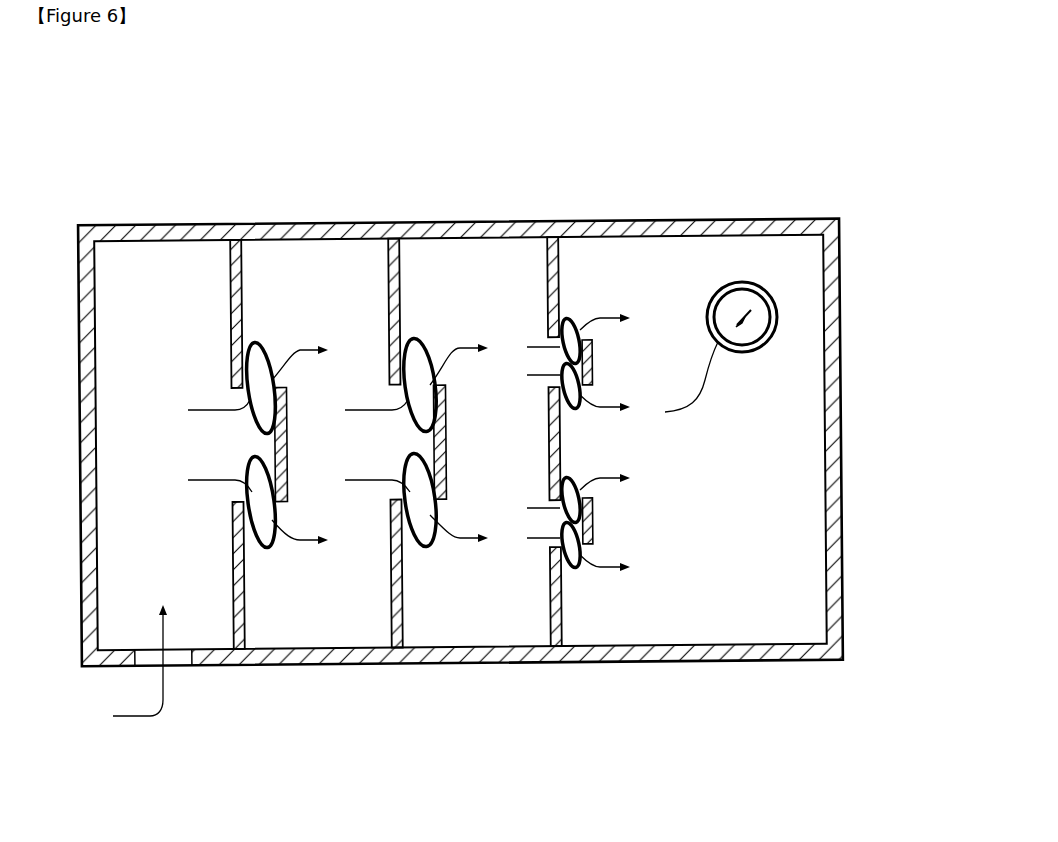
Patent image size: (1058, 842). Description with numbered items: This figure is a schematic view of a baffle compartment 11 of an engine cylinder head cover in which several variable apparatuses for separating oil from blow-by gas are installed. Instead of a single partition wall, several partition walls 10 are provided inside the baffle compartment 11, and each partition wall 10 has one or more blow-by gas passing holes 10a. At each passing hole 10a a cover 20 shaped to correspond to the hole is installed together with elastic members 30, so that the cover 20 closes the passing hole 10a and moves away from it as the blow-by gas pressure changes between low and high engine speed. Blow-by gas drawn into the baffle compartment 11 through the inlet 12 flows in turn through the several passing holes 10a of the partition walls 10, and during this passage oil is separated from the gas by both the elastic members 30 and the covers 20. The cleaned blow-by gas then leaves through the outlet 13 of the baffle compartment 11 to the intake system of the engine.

The partition wall 10 is at (243, 275).
The blow-by gas passing hole 10a is at (236, 394).
The baffle compartment 11 is at (125, 226).
The inlet 12 is at (178, 669).
The outlet 13 is at (775, 323).
The cover 20 is at (288, 444).
The elastic member 30 is at (250, 400).